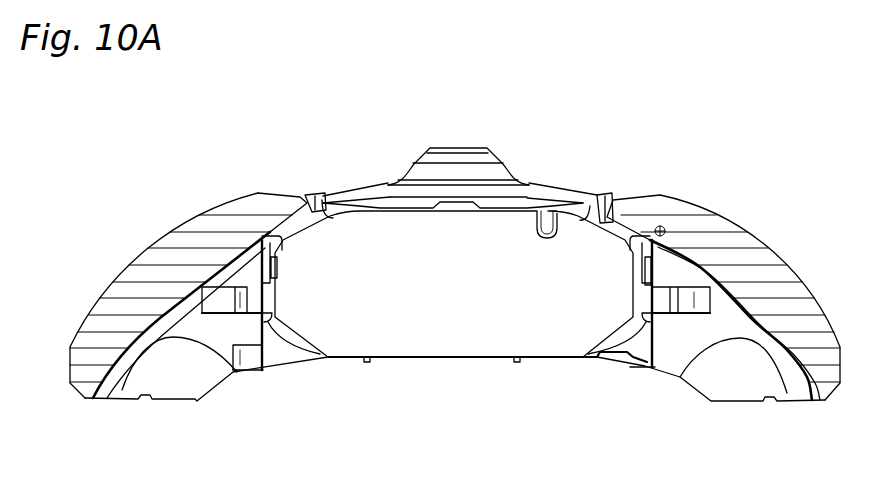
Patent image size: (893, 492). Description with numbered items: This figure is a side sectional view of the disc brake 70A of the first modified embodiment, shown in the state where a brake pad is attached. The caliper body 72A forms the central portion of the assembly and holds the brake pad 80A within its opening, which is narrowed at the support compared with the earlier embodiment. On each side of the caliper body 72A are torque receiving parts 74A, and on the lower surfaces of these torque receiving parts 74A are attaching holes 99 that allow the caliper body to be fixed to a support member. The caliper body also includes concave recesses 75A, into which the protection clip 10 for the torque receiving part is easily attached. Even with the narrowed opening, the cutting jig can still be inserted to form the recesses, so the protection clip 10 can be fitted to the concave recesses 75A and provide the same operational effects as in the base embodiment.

The protection clip 10 is at (215, 300).
The disc brake 70A is at (465, 76).
The caliper body 72A is at (460, 178).
The torque receiving part 74A is at (264, 345).
The concave recess 75A is at (219, 303).
The brake pad 80A is at (393, 318).
The attaching hole 99 is at (177, 403).